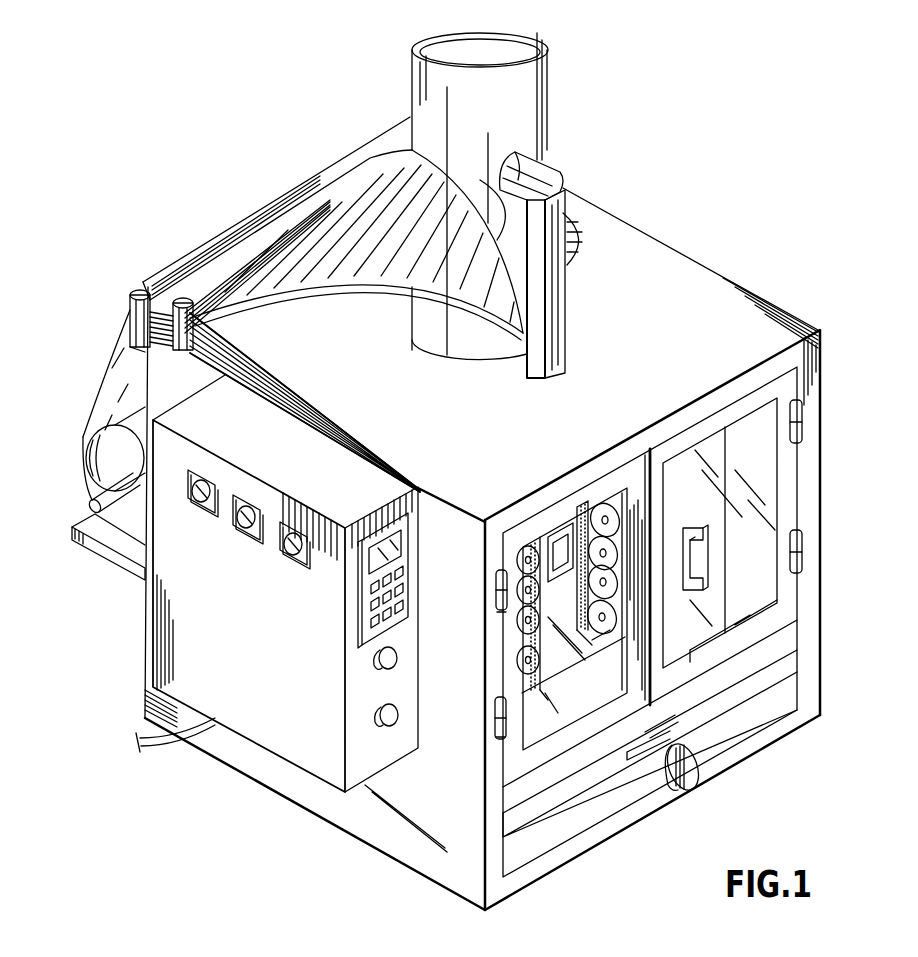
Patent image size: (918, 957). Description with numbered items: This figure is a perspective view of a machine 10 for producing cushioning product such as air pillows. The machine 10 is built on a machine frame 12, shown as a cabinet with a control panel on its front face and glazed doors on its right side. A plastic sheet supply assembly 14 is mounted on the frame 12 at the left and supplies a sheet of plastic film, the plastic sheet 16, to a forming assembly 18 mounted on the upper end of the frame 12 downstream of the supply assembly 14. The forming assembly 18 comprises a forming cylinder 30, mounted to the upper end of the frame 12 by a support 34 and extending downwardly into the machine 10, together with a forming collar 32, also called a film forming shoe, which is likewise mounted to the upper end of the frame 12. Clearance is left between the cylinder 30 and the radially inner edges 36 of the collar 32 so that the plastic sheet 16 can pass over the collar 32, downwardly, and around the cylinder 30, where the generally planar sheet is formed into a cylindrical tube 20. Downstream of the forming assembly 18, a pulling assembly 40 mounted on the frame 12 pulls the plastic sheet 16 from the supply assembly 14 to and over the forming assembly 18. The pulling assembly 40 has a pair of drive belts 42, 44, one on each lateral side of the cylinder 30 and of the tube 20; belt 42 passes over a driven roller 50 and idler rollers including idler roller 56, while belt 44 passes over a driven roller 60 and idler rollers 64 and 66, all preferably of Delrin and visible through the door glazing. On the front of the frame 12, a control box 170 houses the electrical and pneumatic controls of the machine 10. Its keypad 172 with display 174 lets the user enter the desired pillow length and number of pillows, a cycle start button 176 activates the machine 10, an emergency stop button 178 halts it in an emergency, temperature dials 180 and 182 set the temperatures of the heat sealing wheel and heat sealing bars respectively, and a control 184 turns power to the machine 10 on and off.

The machine 10 is at (194, 844).
The machine frame 12 is at (822, 441).
The plastic sheet supply assembly 14 is at (60, 537).
The plastic sheet 16 is at (118, 354).
The forming assembly 18 is at (384, 89).
The tube 20 is at (462, 358).
The forming cylinder 30 is at (548, 81).
The forming collar 32 is at (580, 238).
The support 34 is at (566, 321).
The radially inner edges 36 is at (496, 204).
The pulling assembly 40 is at (573, 653).
The drive belt 42 is at (688, 497).
The drive belt 44 is at (570, 545).
The driven roller 50 is at (497, 684).
The idler roller 56 is at (532, 552).
The driven roller 60 is at (592, 640).
The idler roller 64 is at (677, 506).
The idler roller 66 is at (573, 638).
The control box 170 is at (243, 637).
The keypad 172 is at (410, 593).
The display 174 is at (383, 525).
The cycle start button 176 is at (378, 717).
The emergency stop button 178 is at (378, 656).
The temperature dial 180 is at (216, 470).
The temperature dial 182 is at (262, 495).
The control 184 is at (293, 556).